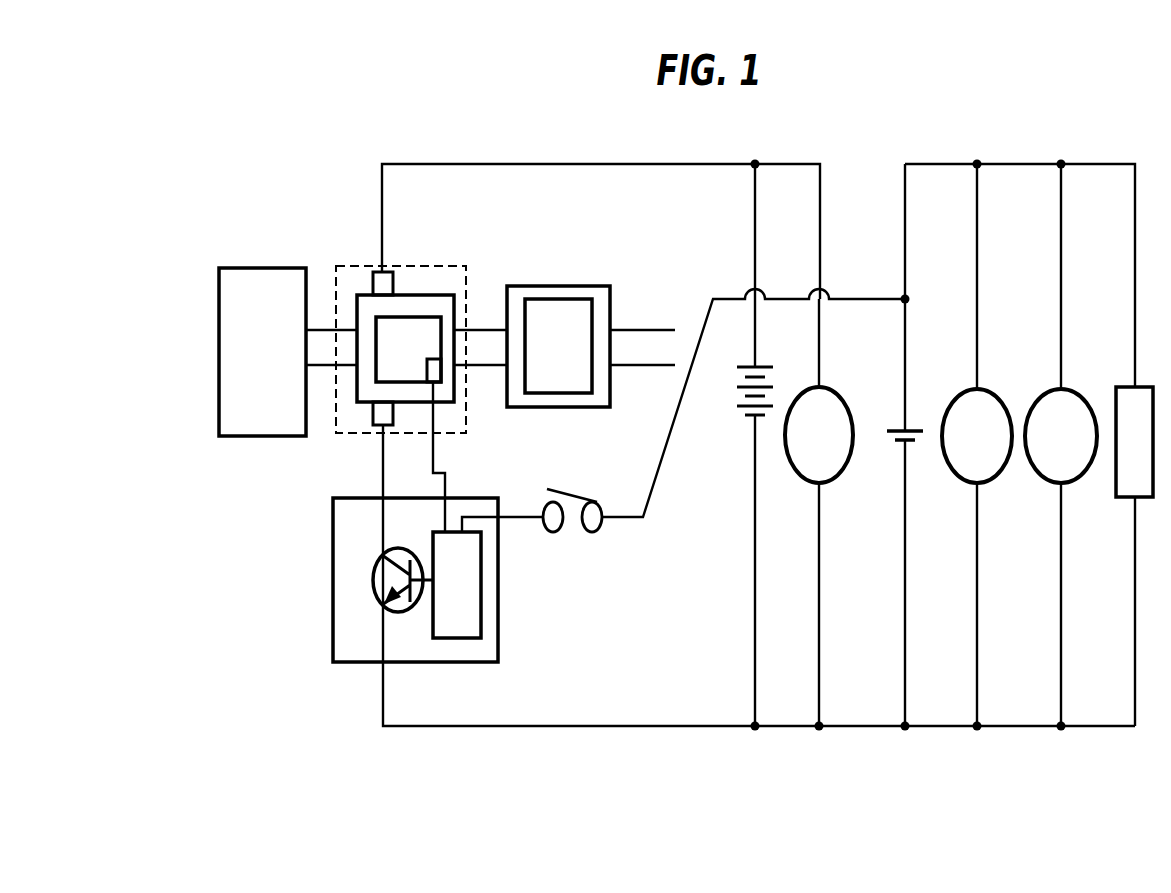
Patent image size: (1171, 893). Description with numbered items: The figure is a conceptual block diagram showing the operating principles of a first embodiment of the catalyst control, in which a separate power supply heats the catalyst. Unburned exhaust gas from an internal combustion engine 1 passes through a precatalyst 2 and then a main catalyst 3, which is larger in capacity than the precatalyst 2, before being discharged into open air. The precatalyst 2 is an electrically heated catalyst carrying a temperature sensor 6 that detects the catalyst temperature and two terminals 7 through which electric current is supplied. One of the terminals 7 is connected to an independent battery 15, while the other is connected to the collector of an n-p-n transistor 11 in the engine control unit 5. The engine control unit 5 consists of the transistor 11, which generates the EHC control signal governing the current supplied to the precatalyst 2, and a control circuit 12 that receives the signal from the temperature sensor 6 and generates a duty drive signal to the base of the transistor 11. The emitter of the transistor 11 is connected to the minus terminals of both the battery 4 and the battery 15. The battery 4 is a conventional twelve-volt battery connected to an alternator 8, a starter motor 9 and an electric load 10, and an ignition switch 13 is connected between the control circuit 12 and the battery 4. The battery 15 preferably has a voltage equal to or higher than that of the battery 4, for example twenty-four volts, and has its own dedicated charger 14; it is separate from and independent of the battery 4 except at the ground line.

The internal combustion engine 1 is at (263, 268).
The precatalyst 2 is at (422, 280).
The main catalyst 3 is at (559, 286).
The battery 4 is at (893, 452).
The engine control unit 5 is at (350, 527).
The temperature sensor 6 is at (441, 372).
The terminals 7 is at (373, 283).
The alternator 8 is at (961, 462).
The starter motor 9 is at (1045, 462).
The electric load 10 is at (1120, 470).
The transistor 11 is at (372, 583).
The control circuit 12 is at (465, 605).
The ignition switch 13 is at (609, 510).
The charger 14 is at (806, 463).
The battery 15 is at (736, 404).